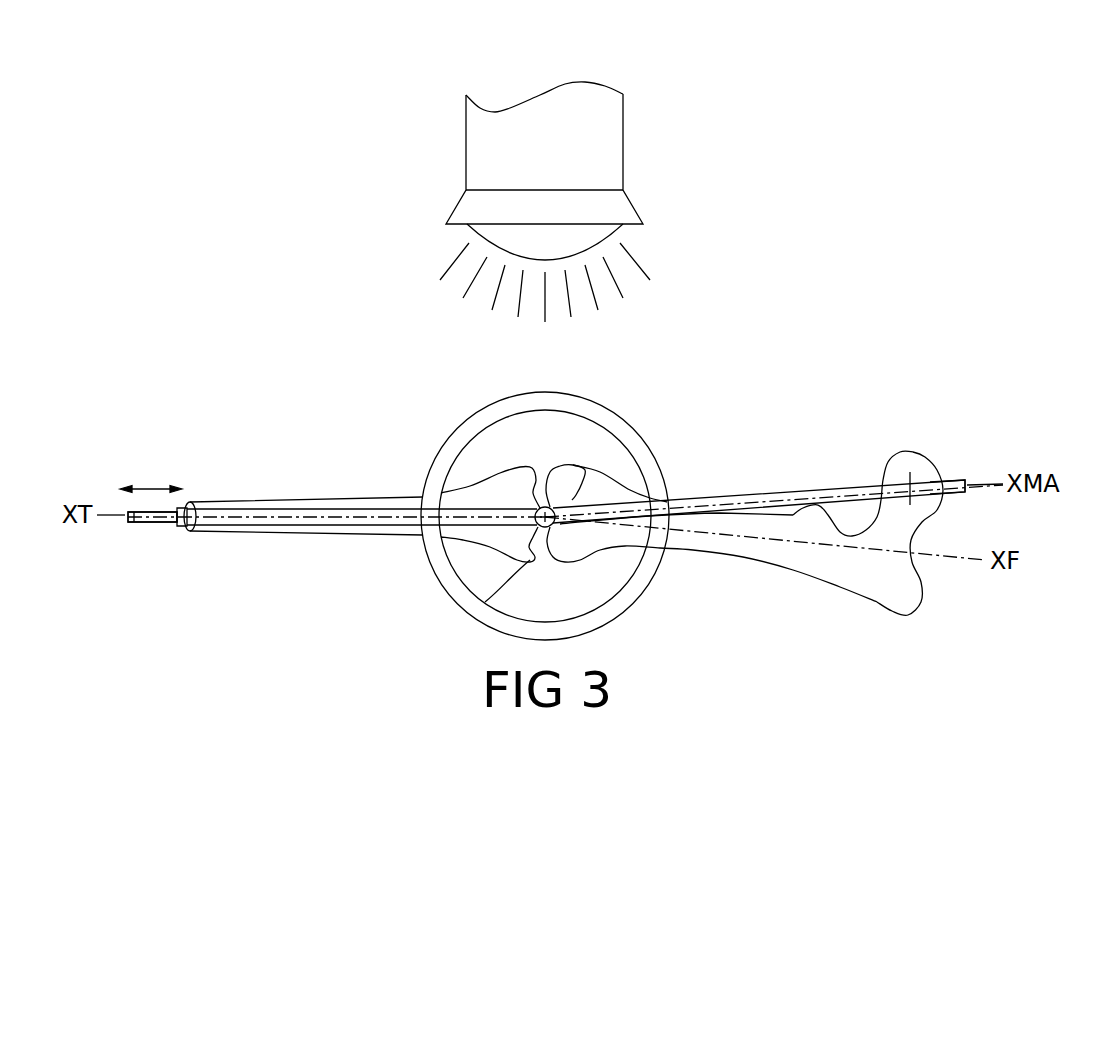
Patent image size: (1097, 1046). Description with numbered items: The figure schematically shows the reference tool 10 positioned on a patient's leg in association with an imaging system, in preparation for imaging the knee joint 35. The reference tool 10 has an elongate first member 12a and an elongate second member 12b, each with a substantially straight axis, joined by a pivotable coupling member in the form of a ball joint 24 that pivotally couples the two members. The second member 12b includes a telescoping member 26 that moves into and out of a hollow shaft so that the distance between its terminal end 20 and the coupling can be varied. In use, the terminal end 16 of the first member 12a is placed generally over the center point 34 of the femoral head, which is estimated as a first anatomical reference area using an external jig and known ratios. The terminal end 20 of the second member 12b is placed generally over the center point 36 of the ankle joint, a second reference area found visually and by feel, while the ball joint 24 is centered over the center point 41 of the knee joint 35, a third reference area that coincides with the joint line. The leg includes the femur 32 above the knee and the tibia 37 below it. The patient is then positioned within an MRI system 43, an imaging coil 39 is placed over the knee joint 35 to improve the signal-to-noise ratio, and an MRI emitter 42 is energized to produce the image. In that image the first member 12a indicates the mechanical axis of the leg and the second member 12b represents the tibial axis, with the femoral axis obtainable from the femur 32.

The reference tool 10 is at (783, 461).
The first member 12a is at (722, 494).
The second member 12b is at (303, 484).
The terminal end 16 is at (952, 478).
The terminal end 20 is at (128, 513).
The ball joint 24 is at (585, 470).
The telescoping member 26 is at (163, 525).
The femur 32 is at (877, 594).
The center point of the femoral head 34 is at (911, 472).
The knee joint 35 is at (537, 460).
The center point of the ankle joint 36 is at (128, 519).
The tibia 37 is at (412, 500).
The imaging coil 39 is at (612, 610).
The center point of the knee joint 41 is at (485, 602).
The MRI emitter 42 is at (607, 155).
The MRI system 43 is at (410, 280).